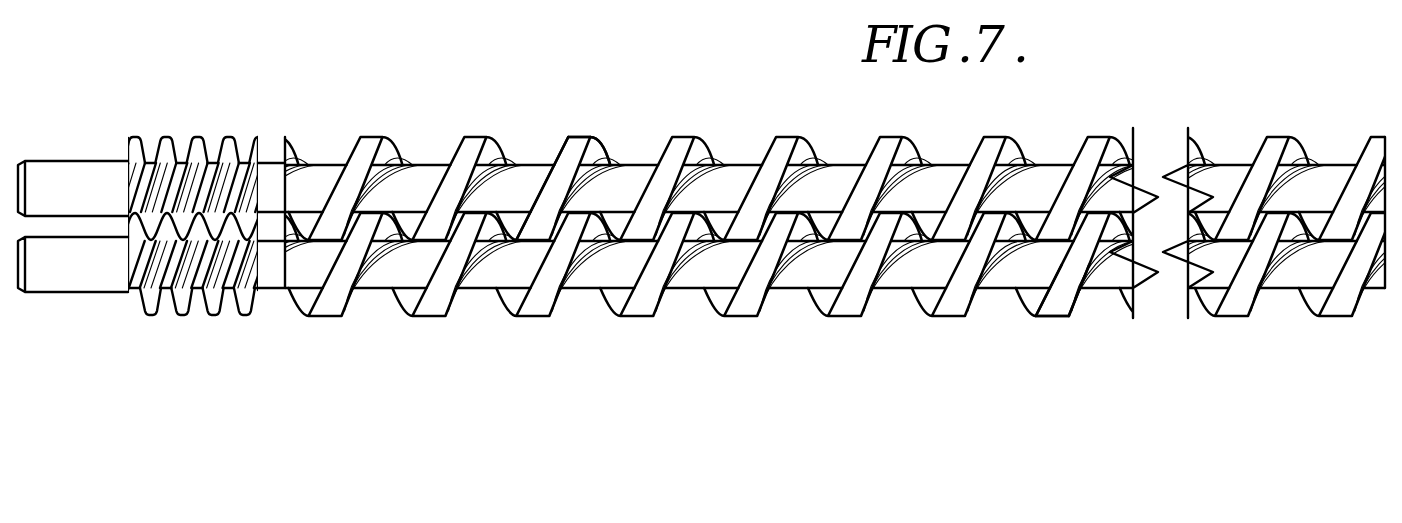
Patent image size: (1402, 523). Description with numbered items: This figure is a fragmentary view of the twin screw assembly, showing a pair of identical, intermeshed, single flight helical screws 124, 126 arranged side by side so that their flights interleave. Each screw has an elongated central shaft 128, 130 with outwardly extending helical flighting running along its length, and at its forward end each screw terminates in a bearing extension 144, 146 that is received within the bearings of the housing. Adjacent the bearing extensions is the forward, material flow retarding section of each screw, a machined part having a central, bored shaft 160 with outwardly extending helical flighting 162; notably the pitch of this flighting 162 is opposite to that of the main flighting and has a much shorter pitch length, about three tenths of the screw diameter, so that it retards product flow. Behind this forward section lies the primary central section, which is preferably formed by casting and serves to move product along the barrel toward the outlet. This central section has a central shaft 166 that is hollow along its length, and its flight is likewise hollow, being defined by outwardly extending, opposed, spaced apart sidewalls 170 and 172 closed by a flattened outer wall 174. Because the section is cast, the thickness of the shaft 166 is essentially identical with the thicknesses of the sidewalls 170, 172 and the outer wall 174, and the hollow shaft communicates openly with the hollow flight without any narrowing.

The helical screw 124 is at (650, 290).
The helical screw 126 is at (650, 149).
The central shaft 128 is at (392, 280).
The central shaft 130 is at (413, 175).
The bearing extension 144 is at (75, 290).
The bearing extension 146 is at (65, 173).
The bored shaft 160 is at (248, 163).
The helical flighting 162 is at (175, 140).
The central shaft 166 is at (1038, 177).
The sidewall 170 is at (600, 150).
The sidewall 172 is at (557, 157).
The outer wall 174 is at (585, 137).